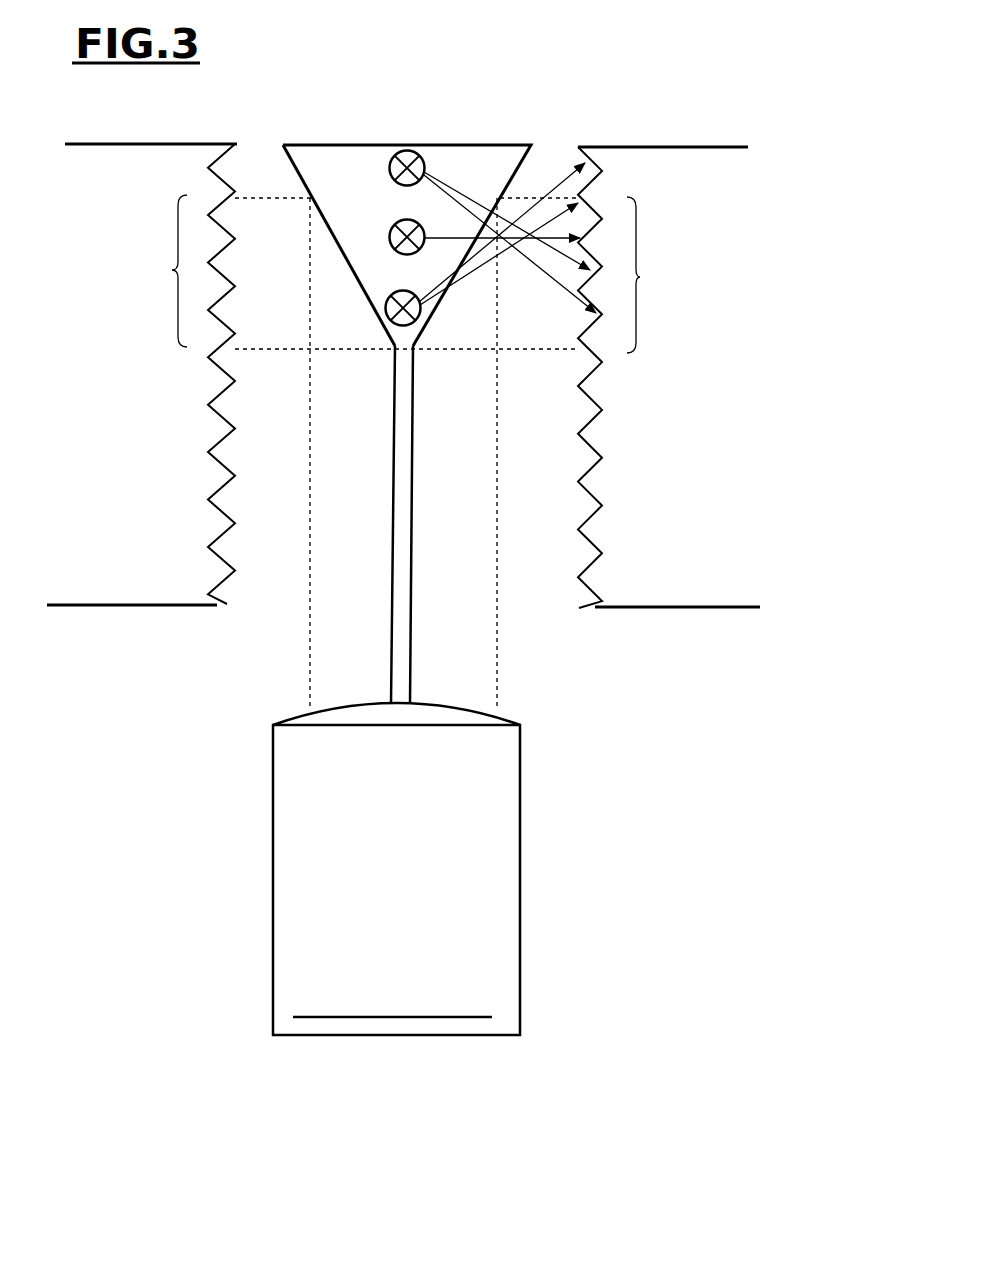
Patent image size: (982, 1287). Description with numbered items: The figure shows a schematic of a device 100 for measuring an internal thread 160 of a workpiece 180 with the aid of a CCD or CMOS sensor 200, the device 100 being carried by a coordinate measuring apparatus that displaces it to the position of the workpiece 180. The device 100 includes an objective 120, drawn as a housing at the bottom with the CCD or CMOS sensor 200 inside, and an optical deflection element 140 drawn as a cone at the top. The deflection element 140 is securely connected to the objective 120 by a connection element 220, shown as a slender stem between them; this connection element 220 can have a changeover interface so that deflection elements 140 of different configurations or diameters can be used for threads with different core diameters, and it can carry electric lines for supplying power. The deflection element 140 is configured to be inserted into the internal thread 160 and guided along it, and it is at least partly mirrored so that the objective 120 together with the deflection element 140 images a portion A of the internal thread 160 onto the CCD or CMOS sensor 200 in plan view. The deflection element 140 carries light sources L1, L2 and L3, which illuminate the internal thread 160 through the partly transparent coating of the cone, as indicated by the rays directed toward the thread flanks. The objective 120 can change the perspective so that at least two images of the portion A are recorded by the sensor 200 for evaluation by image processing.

The device 100 is at (311, 580).
The objective 120 is at (297, 713).
The optical deflection element 140 is at (439, 182).
The internal thread 160 is at (592, 445).
The workpiece 180 is at (661, 147).
The CCD or CMOS sensor 200 is at (320, 1020).
The connection element 220 is at (412, 520).
The light source L1 is at (471, 232).
The light source L2 is at (465, 237).
The light source L3 is at (480, 244).
The portion of the internal thread A is at (403, 274).